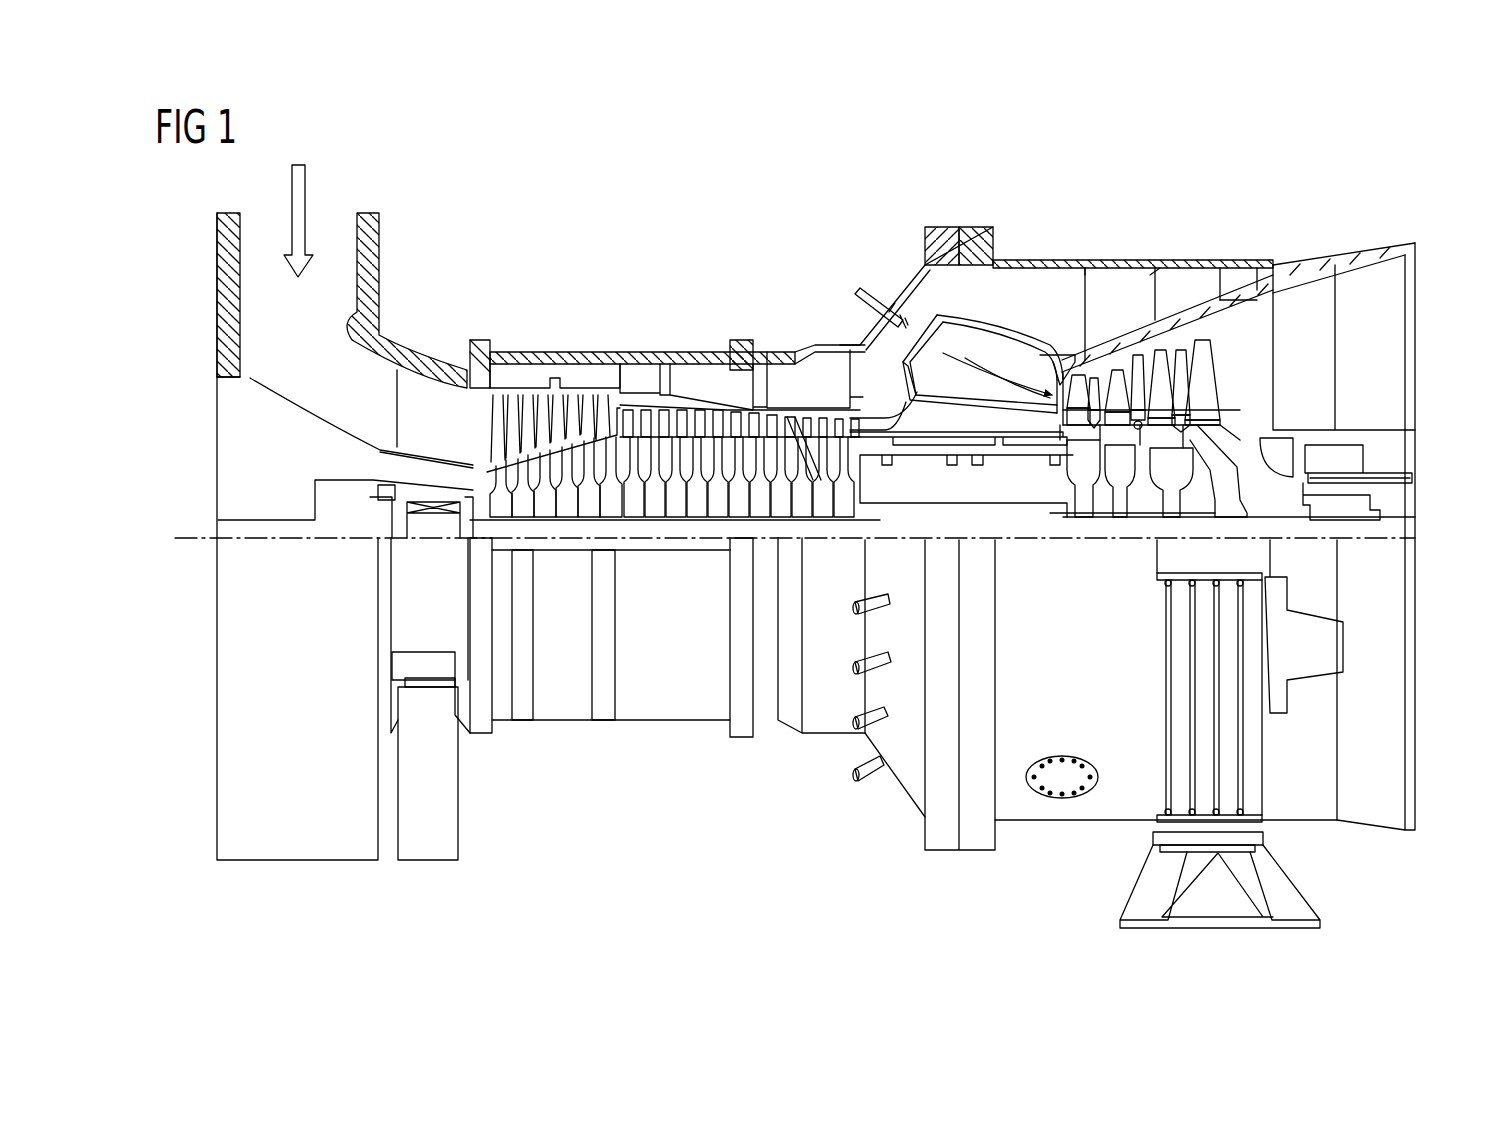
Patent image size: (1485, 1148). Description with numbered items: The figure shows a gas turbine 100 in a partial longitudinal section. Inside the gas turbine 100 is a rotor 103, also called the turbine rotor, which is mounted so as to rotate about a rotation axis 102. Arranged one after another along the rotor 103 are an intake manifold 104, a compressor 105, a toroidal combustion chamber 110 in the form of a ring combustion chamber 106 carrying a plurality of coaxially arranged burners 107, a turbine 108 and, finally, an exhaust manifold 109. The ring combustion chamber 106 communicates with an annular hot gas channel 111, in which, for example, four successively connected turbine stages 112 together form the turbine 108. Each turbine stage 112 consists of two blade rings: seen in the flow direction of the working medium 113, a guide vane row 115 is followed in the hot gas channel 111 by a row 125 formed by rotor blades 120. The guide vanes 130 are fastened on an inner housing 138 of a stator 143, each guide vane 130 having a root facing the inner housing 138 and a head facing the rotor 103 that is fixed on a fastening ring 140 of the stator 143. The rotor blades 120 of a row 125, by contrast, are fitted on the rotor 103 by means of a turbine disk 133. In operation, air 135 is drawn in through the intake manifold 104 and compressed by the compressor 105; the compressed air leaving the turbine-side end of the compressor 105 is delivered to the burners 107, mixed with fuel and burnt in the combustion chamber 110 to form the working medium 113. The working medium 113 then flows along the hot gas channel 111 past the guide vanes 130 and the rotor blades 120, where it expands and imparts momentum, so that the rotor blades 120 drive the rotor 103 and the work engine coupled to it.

The gas turbine 100 is at (678, 224).
The rotation axis 102 is at (190, 537).
The rotor 103 is at (937, 503).
The intake manifold 104 is at (367, 258).
The compressor 105 is at (568, 328).
The ring combustion chamber 106 is at (1030, 353).
The burners 107 is at (858, 300).
The turbine 108 is at (1072, 212).
The exhaust manifold 109 is at (1313, 272).
The toroidal combustion chamber 110 is at (912, 277).
The hot gas channel 111 is at (1243, 337).
The turbine stages 112 is at (1221, 212).
The working medium 113 is at (950, 335).
The guide vane row 115 is at (1188, 300).
The rotor blades 120 is at (1160, 393).
The row 125 is at (1240, 282).
The guide vanes 130 is at (1182, 373).
The turbine disk 133 is at (1248, 515).
The air 135 is at (300, 191).
The inner housing 138 is at (1120, 300).
The fastening ring 140 is at (1053, 425).
The stator 143 is at (1037, 257).